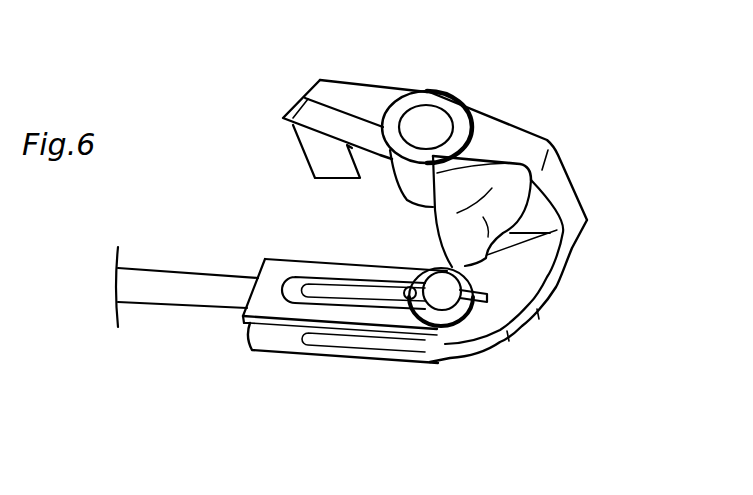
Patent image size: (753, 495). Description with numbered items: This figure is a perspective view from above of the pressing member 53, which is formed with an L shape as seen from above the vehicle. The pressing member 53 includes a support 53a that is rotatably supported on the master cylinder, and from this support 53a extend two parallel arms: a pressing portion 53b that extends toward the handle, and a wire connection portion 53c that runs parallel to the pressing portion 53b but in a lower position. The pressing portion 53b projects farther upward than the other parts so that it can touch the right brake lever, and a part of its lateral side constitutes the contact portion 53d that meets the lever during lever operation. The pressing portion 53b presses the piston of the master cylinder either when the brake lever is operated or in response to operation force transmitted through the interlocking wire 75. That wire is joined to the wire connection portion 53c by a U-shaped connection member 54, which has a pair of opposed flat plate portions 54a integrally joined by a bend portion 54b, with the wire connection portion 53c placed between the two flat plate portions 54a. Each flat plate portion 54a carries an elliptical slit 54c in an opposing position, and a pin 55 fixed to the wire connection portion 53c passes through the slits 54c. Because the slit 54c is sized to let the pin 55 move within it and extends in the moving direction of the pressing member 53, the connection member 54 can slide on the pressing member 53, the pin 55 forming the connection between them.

The pressing member 53 is at (580, 138).
The support 53a is at (450, 98).
The pressing portion 53b is at (503, 222).
The wire connection portion 53c is at (517, 298).
The contact portion 53d is at (483, 153).
The connection member 54 is at (318, 366).
The flat plate portions 54a is at (288, 267).
The bend portion 54b is at (260, 268).
The slits 54c is at (372, 303).
The pin 55 is at (441, 303).
The interlocking wire 75 is at (175, 290).